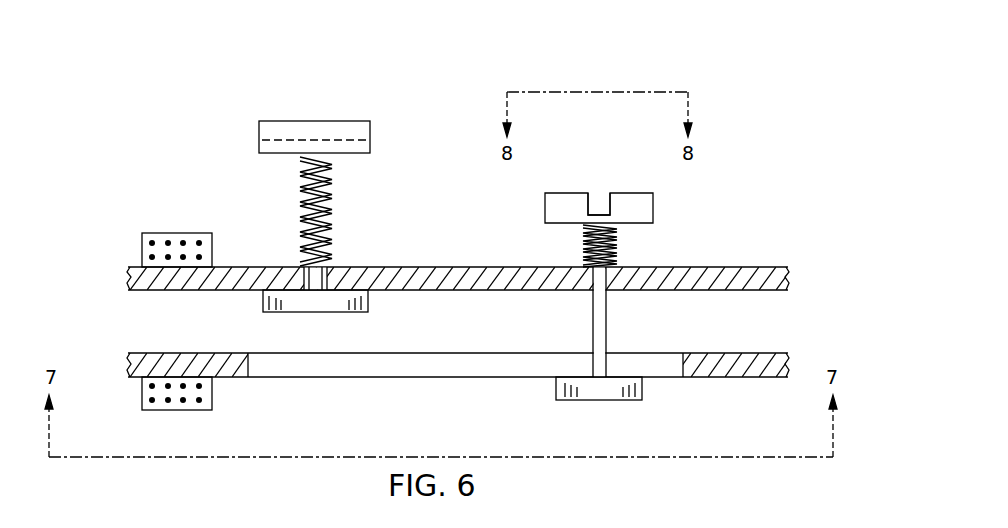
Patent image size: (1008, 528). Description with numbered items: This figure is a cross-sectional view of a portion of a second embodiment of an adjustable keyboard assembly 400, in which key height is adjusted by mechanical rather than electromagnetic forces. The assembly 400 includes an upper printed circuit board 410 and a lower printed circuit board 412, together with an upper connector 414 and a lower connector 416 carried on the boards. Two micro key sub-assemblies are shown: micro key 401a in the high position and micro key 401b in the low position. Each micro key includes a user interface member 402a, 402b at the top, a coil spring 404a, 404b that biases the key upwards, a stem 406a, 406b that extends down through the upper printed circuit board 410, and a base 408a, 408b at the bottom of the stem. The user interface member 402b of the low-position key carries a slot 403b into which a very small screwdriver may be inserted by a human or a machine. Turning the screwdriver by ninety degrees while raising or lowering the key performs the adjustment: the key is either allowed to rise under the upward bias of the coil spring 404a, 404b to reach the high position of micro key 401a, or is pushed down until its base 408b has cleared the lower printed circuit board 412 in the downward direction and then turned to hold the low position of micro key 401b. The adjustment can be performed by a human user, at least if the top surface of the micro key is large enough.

The adjustable keyboard assembly 400 is at (740, 48).
The micro key sub-assembly 401a is at (250, 110).
The micro key sub-assembly 401b is at (710, 180).
The user interface member 402a is at (347, 121).
The user interface member 402b is at (545, 198).
The slot 403b is at (598, 190).
The coil spring 404a is at (332, 183).
The coil spring 404b is at (613, 240).
The stem 406a is at (300, 205).
The stem 406b is at (607, 318).
The base 408a is at (368, 305).
The base 408b is at (595, 402).
The upper printed circuit board 410 is at (400, 267).
The lower printed circuit board 412 is at (455, 378).
The first magnet 414 is at (178, 233).
The lower connector 416 is at (213, 400).